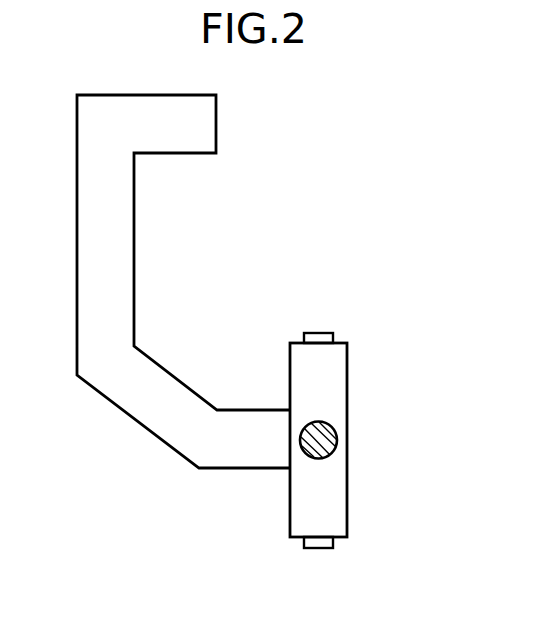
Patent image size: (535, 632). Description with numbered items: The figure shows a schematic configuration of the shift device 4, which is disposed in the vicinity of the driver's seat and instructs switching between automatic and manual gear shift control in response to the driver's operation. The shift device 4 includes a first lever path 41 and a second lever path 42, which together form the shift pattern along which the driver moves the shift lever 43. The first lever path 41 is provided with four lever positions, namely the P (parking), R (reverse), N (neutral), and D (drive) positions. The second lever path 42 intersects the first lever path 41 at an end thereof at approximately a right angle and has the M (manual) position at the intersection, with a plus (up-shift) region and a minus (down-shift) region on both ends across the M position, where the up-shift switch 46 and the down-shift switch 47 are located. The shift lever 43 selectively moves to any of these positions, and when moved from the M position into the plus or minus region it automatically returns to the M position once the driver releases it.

The shift device 4 is at (336, 124).
The first lever path 41 is at (128, 472).
The second lever path 42 is at (375, 316).
The shift lever 43 is at (336, 430).
The up-shift switch 46 is at (322, 332).
The down-shift switch 47 is at (319, 550).